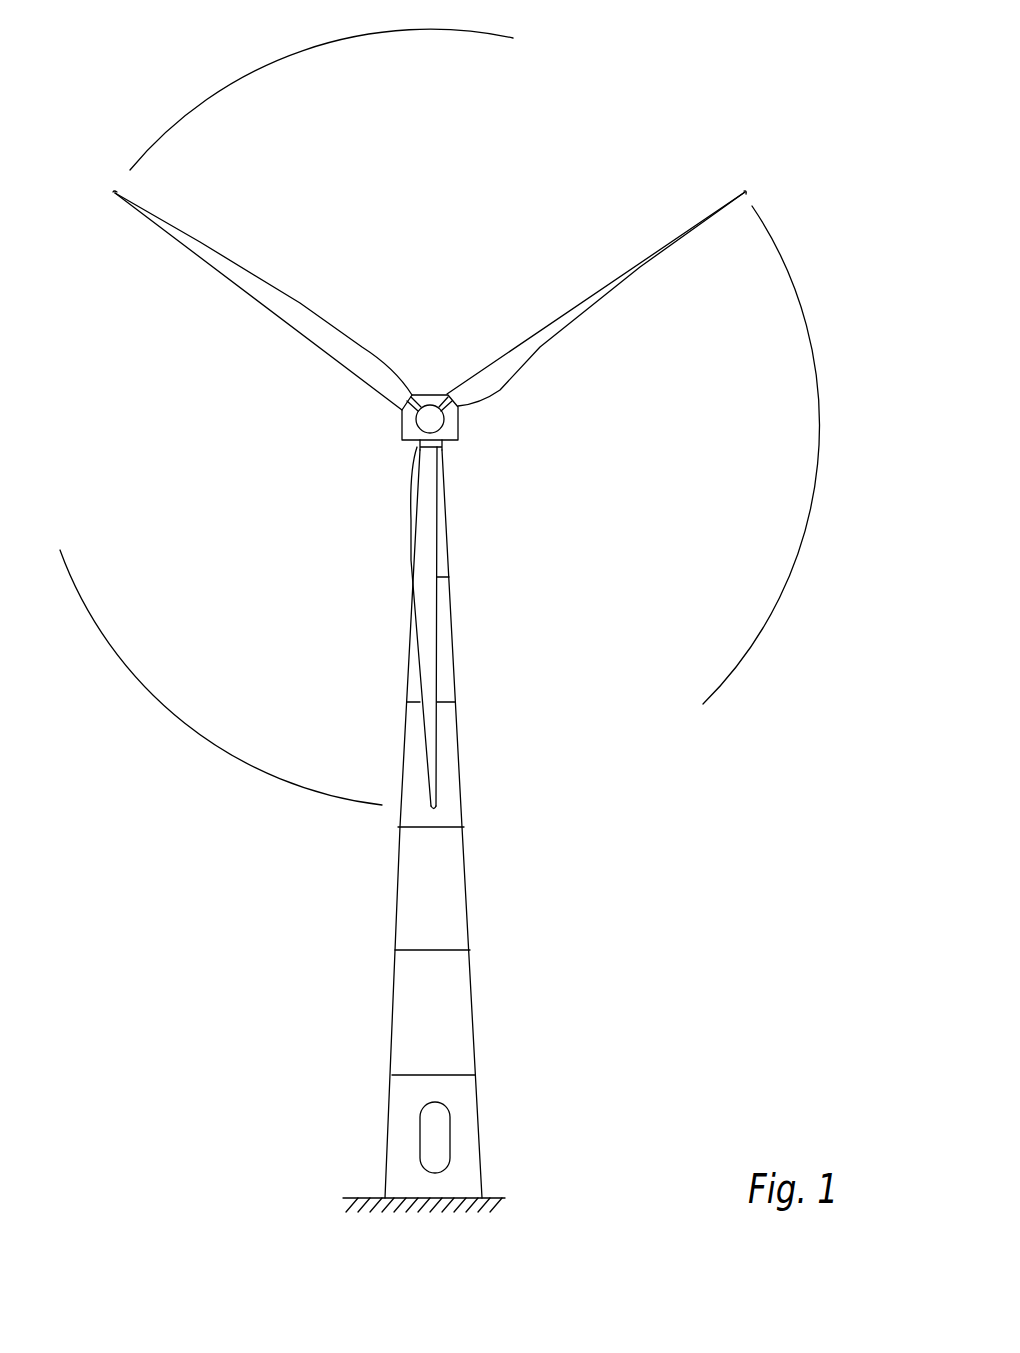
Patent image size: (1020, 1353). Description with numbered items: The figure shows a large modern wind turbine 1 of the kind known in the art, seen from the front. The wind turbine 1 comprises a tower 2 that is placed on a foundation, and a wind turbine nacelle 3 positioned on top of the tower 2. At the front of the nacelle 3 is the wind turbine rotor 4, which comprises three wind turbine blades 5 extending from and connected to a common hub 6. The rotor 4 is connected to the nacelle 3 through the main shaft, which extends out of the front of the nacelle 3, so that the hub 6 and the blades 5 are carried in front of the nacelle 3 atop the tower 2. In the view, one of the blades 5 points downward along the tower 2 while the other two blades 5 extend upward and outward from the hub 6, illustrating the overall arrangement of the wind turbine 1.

The wind turbine 1 is at (439, 620).
The tower 2 is at (460, 900).
The wind turbine nacelle 3 is at (458, 442).
The wind turbine rotor 4 is at (416, 425).
The wind turbine blades 5 is at (432, 667).
The common hub 6 is at (430, 421).